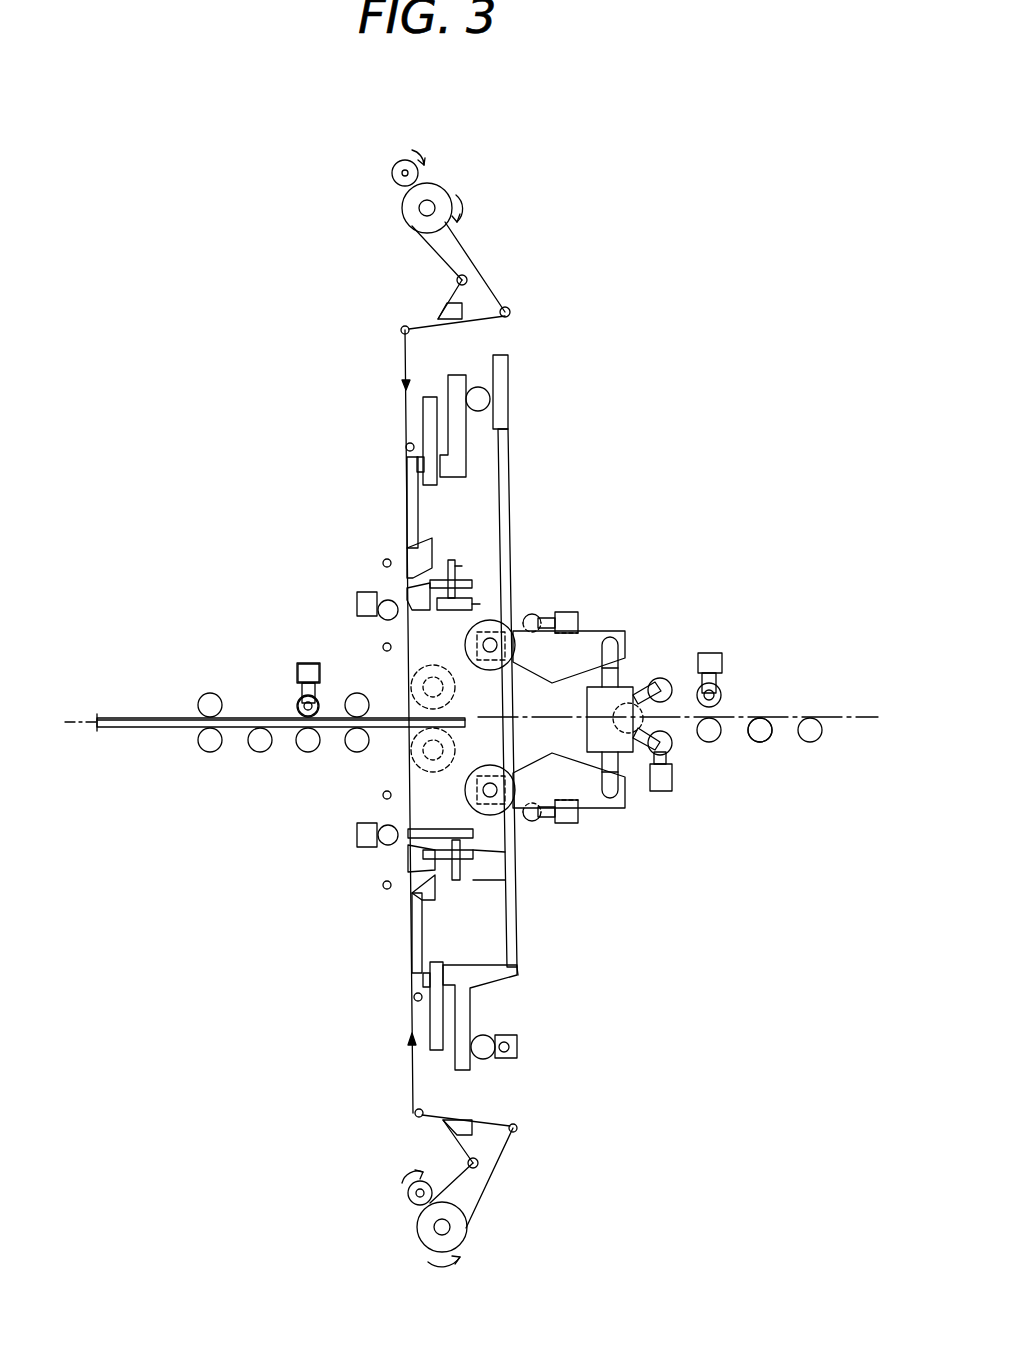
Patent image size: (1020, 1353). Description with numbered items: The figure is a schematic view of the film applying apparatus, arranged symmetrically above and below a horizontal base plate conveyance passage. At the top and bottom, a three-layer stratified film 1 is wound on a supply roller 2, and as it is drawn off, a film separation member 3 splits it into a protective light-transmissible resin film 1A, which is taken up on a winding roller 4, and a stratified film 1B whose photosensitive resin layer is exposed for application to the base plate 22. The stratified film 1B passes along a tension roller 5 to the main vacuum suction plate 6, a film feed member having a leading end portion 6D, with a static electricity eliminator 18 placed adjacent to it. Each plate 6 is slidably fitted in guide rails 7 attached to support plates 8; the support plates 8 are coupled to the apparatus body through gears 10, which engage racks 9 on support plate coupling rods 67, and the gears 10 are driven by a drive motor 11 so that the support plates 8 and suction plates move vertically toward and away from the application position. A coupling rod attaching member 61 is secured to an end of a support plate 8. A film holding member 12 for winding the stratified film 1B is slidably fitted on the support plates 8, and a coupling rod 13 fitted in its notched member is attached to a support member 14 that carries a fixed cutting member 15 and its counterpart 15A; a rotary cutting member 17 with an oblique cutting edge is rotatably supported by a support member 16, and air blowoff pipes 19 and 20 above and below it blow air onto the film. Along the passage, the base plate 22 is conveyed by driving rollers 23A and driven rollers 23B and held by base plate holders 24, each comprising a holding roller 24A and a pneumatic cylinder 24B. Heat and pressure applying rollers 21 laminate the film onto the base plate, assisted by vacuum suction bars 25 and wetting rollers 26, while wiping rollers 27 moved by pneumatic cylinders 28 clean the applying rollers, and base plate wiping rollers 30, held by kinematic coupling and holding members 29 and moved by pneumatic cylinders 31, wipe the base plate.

The stratified film 1 is at (425, 195).
The light-transmissible resin film 1A is at (397, 180).
The stratified film 1B is at (405, 358).
The supply roller 2 is at (403, 158).
The film separation member 3 is at (447, 310).
The winding roller 4 is at (397, 167).
The tension roller 5 is at (405, 328).
The main vacuum suction plate 6 is at (408, 488).
The leading end portion 6D is at (436, 542).
The guide rail 7 is at (423, 400).
The support plate 8 is at (458, 376).
The rack 9 is at (503, 405).
The gear 10 is at (485, 395).
The drive motor 11 is at (517, 1047).
The film holding member 12 is at (477, 607).
The coupling rod 13 is at (457, 567).
The support member 14 is at (450, 608).
The fixed cutting member 15 is at (410, 595).
The clamp 15A is at (410, 840).
The support member 16 is at (358, 598).
The rotary cutting member 17 is at (378, 615).
The static electricity eliminator 18 is at (408, 448).
The air blowoff pipe 19 is at (383, 647).
The air blowoff pipe 20 is at (385, 560).
The heat and pressure applying roller 21 is at (517, 628).
The base plate 22 is at (108, 730).
The driving roller 23A is at (203, 742).
The driven roller 23B is at (200, 705).
The base plate holder 24 is at (712, 652).
The guide roller 24A is at (296, 693).
The guide holder 24B is at (297, 665).
The vacuum suction bar 25 is at (502, 623).
The wetting roller 26 is at (348, 742).
The wiping roller 27 is at (572, 610).
The pneumatic cylinder 28 is at (622, 628).
The base plate wiping roller kinematic coupling and holding member 29 is at (642, 685).
The base plate wiping roller 30 is at (660, 678).
The pneumatic cylinder 31 is at (672, 775).
The coupling rod attaching member 61 is at (520, 972).
The support plate coupling rod 67 is at (505, 443).